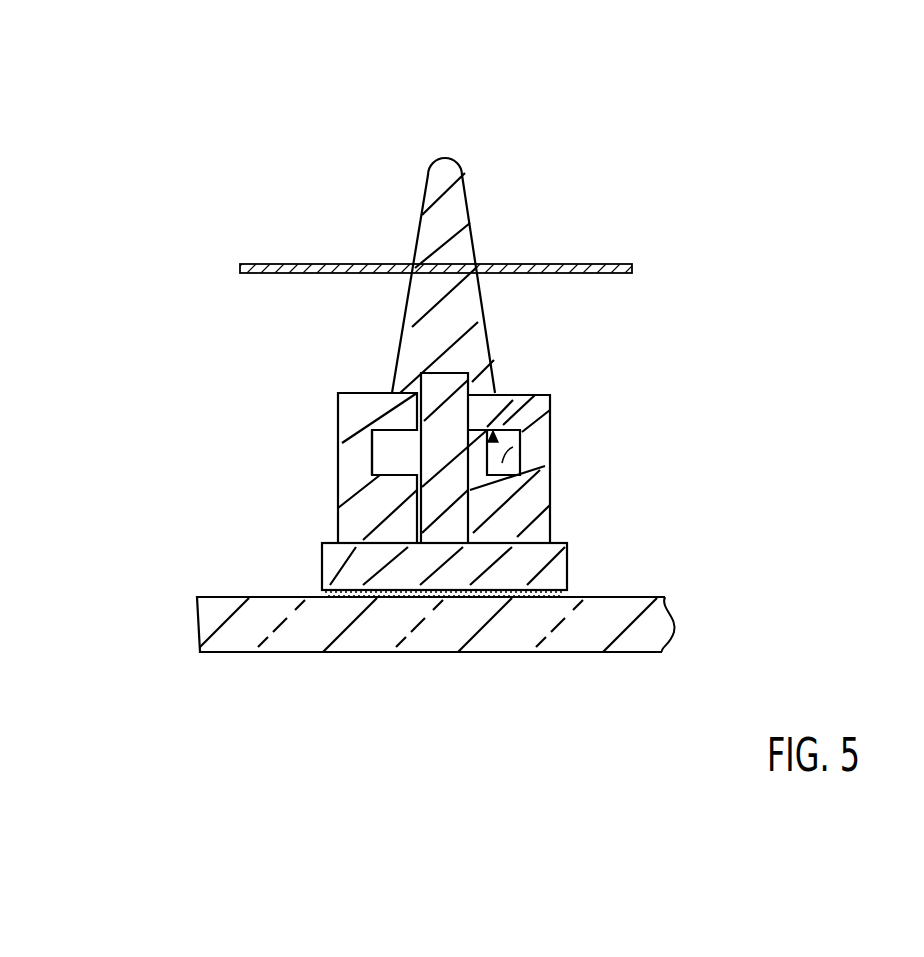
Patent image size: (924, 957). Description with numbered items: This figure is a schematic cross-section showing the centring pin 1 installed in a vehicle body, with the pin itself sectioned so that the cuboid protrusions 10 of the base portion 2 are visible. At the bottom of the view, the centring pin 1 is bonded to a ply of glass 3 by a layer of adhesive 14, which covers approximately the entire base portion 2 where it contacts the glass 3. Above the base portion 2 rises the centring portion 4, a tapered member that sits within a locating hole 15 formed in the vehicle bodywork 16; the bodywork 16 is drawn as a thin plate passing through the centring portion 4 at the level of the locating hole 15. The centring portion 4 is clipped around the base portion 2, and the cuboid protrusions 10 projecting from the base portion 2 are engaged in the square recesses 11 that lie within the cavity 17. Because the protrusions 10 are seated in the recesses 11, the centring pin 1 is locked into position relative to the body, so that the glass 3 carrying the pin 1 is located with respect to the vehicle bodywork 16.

The centring pin 1 is at (572, 112).
The base portion 2 is at (565, 558).
The ply of glass 3 is at (672, 600).
The centring portion 4 is at (475, 343).
The cuboid protrusions 10 is at (408, 458).
The square recesses 11 is at (520, 437).
The layer of adhesive 14 is at (335, 593).
The locating hole 15 is at (412, 262).
The vehicle bodywork 16 is at (627, 266).
The cavity 17 is at (545, 392).